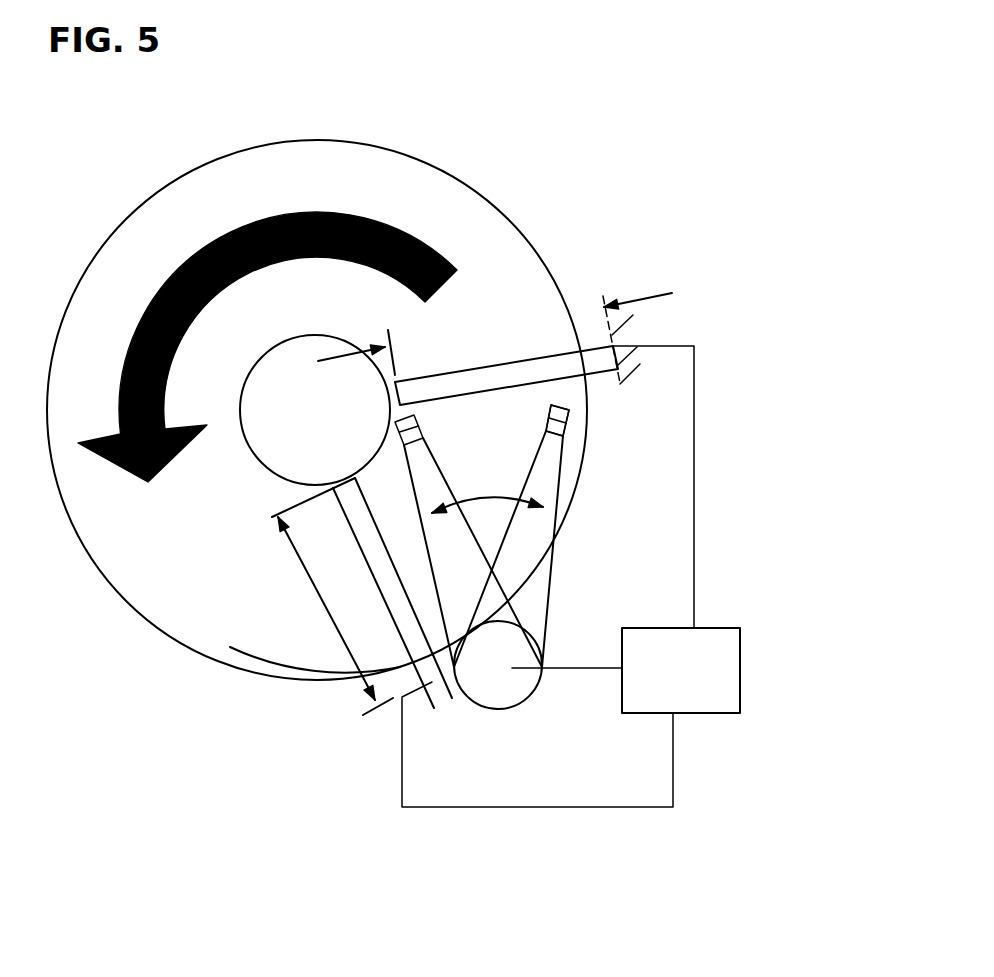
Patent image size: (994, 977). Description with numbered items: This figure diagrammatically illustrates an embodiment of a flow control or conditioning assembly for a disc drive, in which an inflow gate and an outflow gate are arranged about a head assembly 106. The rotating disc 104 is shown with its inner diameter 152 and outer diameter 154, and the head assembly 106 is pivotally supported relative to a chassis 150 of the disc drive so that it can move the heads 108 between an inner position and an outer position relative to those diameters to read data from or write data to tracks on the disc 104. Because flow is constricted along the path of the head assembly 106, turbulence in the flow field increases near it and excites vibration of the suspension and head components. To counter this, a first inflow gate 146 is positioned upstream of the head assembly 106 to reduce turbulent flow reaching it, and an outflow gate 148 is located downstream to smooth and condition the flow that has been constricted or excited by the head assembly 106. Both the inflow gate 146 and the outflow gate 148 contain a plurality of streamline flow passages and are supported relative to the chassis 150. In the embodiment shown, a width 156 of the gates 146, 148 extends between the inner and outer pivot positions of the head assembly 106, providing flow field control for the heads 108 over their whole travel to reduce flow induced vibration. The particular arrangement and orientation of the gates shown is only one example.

The disc 104 is at (468, 183).
The head assembly 106 is at (523, 540).
The heads 108 is at (565, 413).
The inflow gate 146 is at (429, 640).
The outflow gate 148 is at (587, 355).
The chassis 150 is at (710, 628).
The inner diameter 152 is at (258, 460).
The outer diameter 154 is at (288, 678).
The width 156 is at (647, 297).